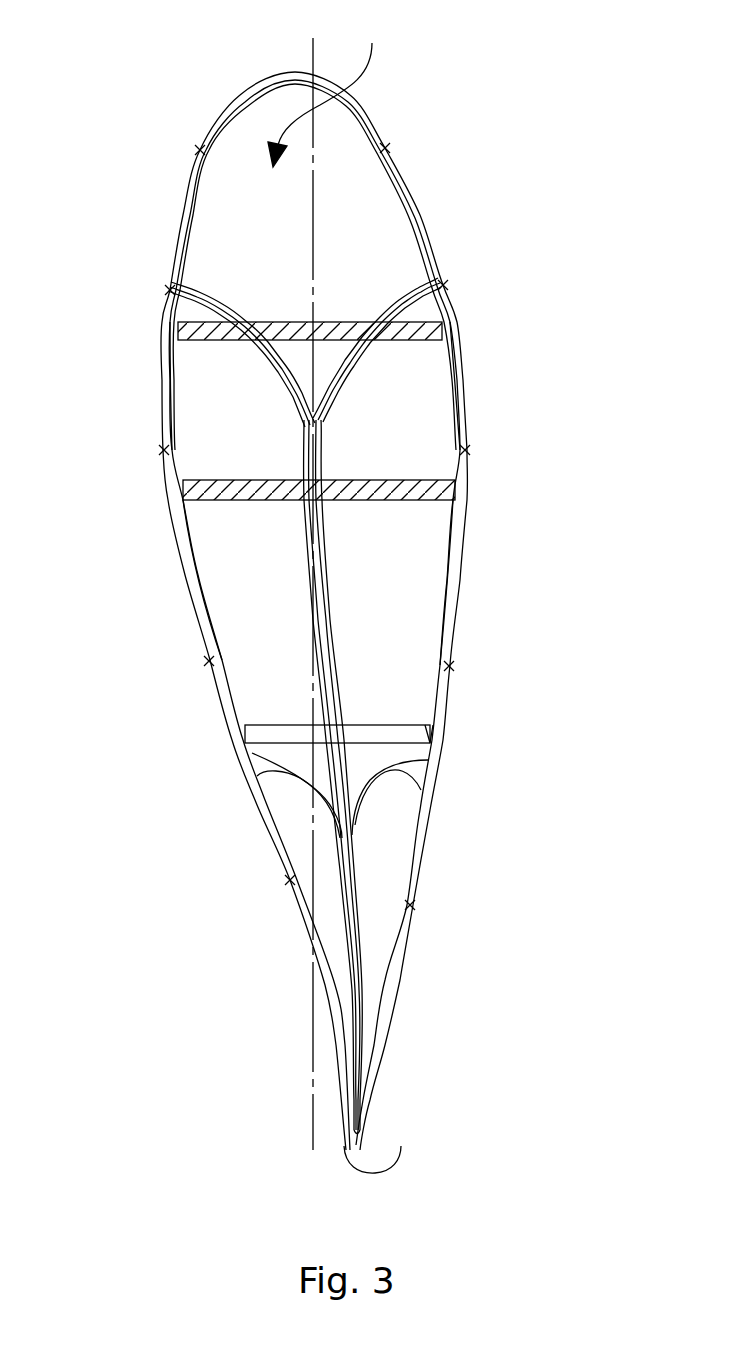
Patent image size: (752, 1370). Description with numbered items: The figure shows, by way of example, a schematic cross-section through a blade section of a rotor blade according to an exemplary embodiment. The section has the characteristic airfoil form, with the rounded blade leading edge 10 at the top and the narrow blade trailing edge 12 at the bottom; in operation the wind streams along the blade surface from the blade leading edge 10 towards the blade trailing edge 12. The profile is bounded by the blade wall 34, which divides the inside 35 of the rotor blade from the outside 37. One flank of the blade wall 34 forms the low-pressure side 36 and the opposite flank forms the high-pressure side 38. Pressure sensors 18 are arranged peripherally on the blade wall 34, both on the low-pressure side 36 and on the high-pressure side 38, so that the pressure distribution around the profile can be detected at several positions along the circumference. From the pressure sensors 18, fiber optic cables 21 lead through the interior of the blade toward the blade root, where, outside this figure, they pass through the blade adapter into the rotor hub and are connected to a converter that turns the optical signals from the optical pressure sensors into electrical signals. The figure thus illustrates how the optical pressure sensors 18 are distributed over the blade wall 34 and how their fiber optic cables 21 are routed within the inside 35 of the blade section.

The blade leading edge 10 is at (232, 105).
The blade trailing edge 12 is at (392, 1160).
The pressure sensor 18 is at (200, 150).
The fiber optic cable 21 is at (292, 355).
The blade wall 34 is at (190, 587).
The inside 35 is at (326, 86).
The low-pressure side 36 is at (466, 372).
The outside 37 is at (623, 109).
The high-pressure side 38 is at (163, 402).